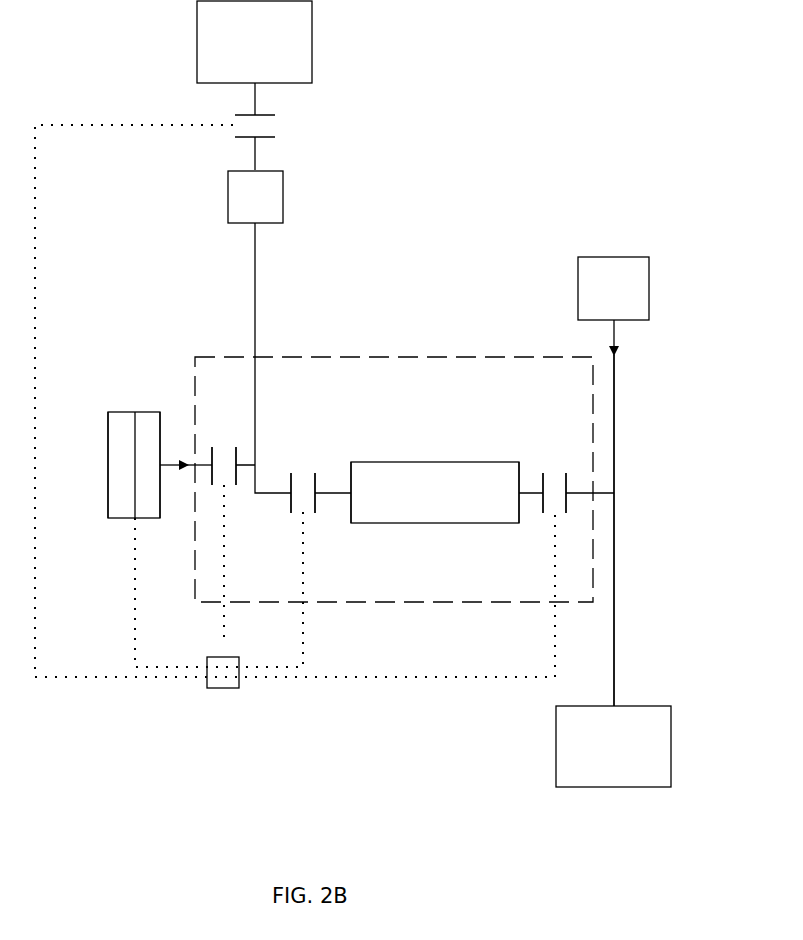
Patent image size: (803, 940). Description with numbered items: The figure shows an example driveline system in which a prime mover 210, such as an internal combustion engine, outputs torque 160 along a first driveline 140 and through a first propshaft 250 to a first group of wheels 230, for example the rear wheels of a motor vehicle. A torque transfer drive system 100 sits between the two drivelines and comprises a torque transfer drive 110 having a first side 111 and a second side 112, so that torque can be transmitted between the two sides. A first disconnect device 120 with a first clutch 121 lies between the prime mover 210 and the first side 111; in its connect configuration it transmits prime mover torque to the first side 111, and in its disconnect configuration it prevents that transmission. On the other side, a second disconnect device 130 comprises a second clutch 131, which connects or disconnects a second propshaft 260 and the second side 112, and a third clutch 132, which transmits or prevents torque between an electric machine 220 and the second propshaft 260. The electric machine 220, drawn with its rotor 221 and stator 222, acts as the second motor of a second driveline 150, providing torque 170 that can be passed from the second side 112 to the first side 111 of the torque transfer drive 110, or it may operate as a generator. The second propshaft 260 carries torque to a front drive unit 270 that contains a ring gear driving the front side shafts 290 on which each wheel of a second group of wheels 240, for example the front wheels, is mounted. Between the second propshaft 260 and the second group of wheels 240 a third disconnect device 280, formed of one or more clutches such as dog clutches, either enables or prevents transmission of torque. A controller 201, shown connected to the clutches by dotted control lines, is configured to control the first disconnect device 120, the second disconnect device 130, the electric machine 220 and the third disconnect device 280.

The torque transfer drive system 100 is at (410, 605).
The torque transfer drive 110 is at (433, 525).
The first side 111 is at (520, 510).
The second side 112 is at (350, 508).
The first disconnect device 120 is at (575, 425).
The first clutch 121 is at (555, 473).
The second disconnect device 130 is at (320, 378).
The second clutch 131 is at (303, 473).
The third clutch 132 is at (223, 447).
The first driveline 140 is at (662, 430).
The second driveline 150 is at (193, 243).
The torque 160 is at (614, 365).
The torque 170 is at (187, 470).
The controller 201 is at (224, 690).
The prime mover 210 is at (614, 256).
The electric machine 220 is at (165, 343).
The rotor 221 is at (160, 410).
The stator 222 is at (108, 410).
The first group of wheels 230 is at (671, 747).
The second group of wheels 240 is at (312, 43).
The first propshaft 250 is at (614, 620).
The second propshaft 260 is at (255, 297).
The front drive unit 270 is at (283, 197).
The third disconnect device 280 is at (272, 126).
The front side shafts 290 is at (255, 98).